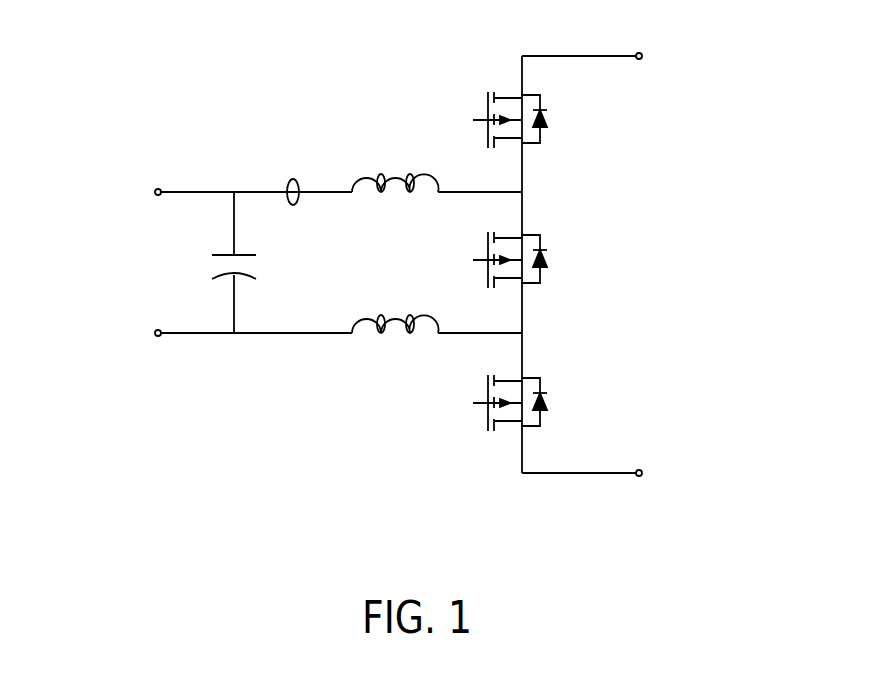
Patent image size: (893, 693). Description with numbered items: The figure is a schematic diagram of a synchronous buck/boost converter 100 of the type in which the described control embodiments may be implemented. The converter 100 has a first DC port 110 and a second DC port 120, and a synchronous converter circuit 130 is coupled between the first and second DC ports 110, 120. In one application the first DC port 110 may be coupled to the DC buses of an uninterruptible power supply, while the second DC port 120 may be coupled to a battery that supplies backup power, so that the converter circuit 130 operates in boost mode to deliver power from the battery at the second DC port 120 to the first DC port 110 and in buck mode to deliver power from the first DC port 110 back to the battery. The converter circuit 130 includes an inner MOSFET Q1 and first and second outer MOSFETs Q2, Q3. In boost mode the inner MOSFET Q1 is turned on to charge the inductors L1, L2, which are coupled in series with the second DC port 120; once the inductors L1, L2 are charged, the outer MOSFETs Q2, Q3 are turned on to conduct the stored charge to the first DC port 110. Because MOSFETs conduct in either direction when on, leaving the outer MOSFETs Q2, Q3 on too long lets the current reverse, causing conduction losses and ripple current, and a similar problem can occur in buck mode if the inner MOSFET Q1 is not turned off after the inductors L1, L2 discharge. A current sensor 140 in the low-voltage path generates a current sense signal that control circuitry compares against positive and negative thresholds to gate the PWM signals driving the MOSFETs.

The synchronous buck/boost converter 100 is at (253, 492).
The first DC port 110 is at (690, 117).
The second DC port 120 is at (120, 205).
The synchronous converter circuit 130 is at (305, 77).
The current sensor 140 is at (273, 175).
The inner MOSFET Q1 is at (455, 225).
The first outer MOSFET Q2 is at (460, 86).
The second outer MOSFET Q3 is at (467, 389).
The inductor L1 is at (373, 212).
The inductor L2 is at (350, 352).